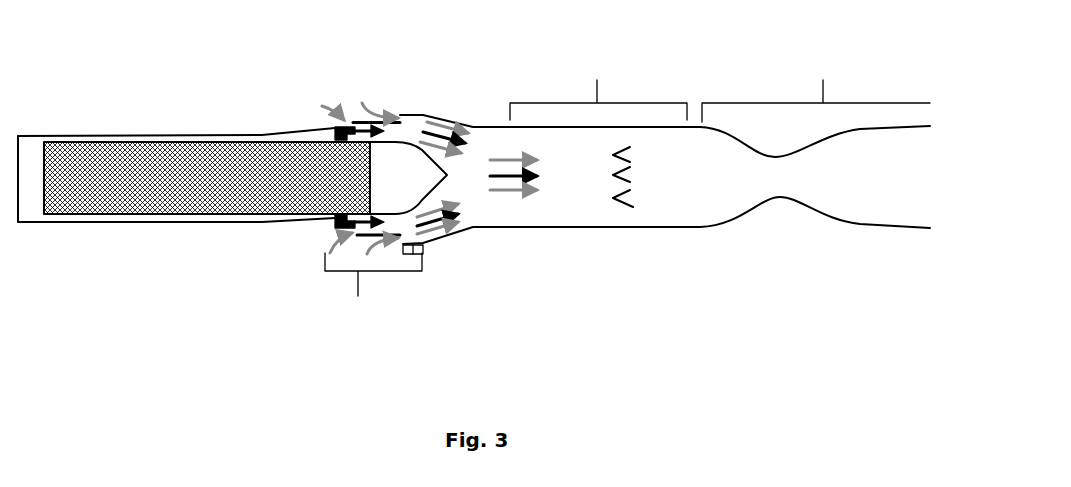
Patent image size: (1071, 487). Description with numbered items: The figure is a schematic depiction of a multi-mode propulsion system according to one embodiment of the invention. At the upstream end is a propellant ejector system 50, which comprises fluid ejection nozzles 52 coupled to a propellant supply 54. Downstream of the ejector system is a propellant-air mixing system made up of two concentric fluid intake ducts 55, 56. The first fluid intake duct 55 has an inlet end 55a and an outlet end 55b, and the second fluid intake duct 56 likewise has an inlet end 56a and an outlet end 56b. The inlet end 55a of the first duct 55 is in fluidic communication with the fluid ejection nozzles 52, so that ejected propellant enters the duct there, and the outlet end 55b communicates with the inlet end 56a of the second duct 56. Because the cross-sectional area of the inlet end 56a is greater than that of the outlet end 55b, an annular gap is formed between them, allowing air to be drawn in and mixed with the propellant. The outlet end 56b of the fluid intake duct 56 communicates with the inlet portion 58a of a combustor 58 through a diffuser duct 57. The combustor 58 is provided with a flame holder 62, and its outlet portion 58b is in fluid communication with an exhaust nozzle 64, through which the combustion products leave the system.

The propellant ejector system 50 is at (386, 233).
The fluid ejection nozzles 52 is at (343, 230).
The propellant supply 54 is at (90, 167).
The fluid intake duct 55 is at (375, 120).
The inlet end 55a is at (353, 120).
The outlet end 55b is at (403, 120).
The fluid intake duct 56 is at (412, 248).
The inlet end 56a is at (405, 247).
The outlet end 56b is at (420, 247).
The diffuser duct 57 is at (423, 245).
The combustor 58 is at (588, 124).
The inlet portion 58a is at (482, 126).
The outlet portion 58b is at (747, 213).
The flame holder 62 is at (628, 200).
The exhaust nozzle 64 is at (815, 107).